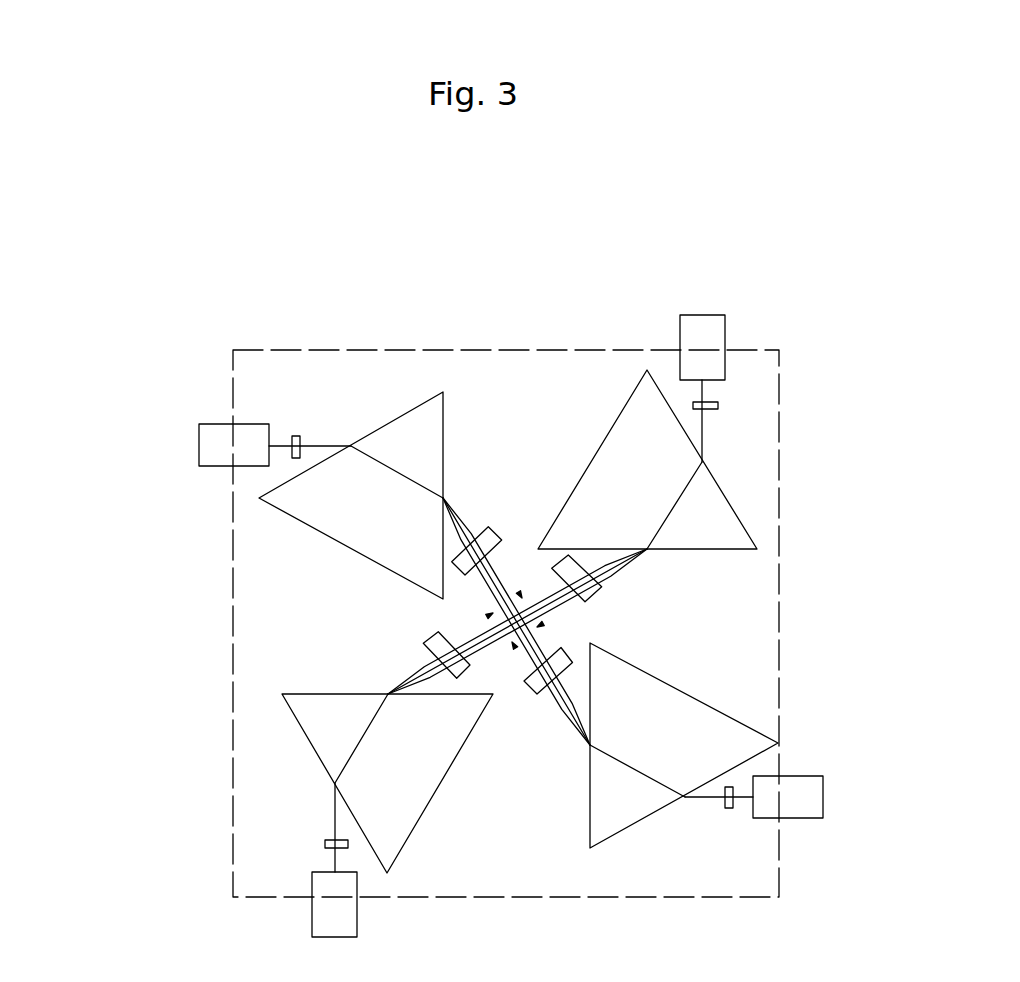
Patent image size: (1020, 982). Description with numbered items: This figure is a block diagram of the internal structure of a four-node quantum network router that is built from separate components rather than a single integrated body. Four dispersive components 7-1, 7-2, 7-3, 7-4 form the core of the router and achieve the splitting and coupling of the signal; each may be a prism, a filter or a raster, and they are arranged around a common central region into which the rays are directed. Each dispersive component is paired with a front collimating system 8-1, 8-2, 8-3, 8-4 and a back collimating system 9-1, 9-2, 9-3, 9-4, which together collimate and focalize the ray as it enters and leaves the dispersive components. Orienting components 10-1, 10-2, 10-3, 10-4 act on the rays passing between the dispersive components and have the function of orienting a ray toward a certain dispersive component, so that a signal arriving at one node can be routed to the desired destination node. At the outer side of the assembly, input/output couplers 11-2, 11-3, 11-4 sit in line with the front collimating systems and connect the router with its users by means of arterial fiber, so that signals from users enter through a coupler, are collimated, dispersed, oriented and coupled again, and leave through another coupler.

The dispersive component 7-1 is at (387, 783).
The dispersive component 7-2 is at (351, 495).
The dispersive component 7-3 is at (647, 459).
The dispersive component 7-4 is at (684, 745).
The front collimating system 8-1 is at (301, 827).
The front collimating system 8-2 is at (310, 433).
The front collimating system 8-3 is at (733, 421).
The front collimating system 8-4 is at (719, 820).
The back collimating system 9-1 is at (421, 655).
The back collimating system 9-2 is at (489, 534).
The back collimating system 9-3 is at (606, 579).
The back collimating system 9-4 is at (533, 689).
The orienting component 10-1 is at (337, 605).
The orienting component 10-2 is at (520, 513).
The orienting component 10-3 is at (653, 621).
The orienting component 10-4 is at (509, 717).
The input/output coupler 11-2 is at (188, 445).
The input/output coupler 11-3 is at (715, 326).
The input/output coupler 11-4 is at (825, 797).